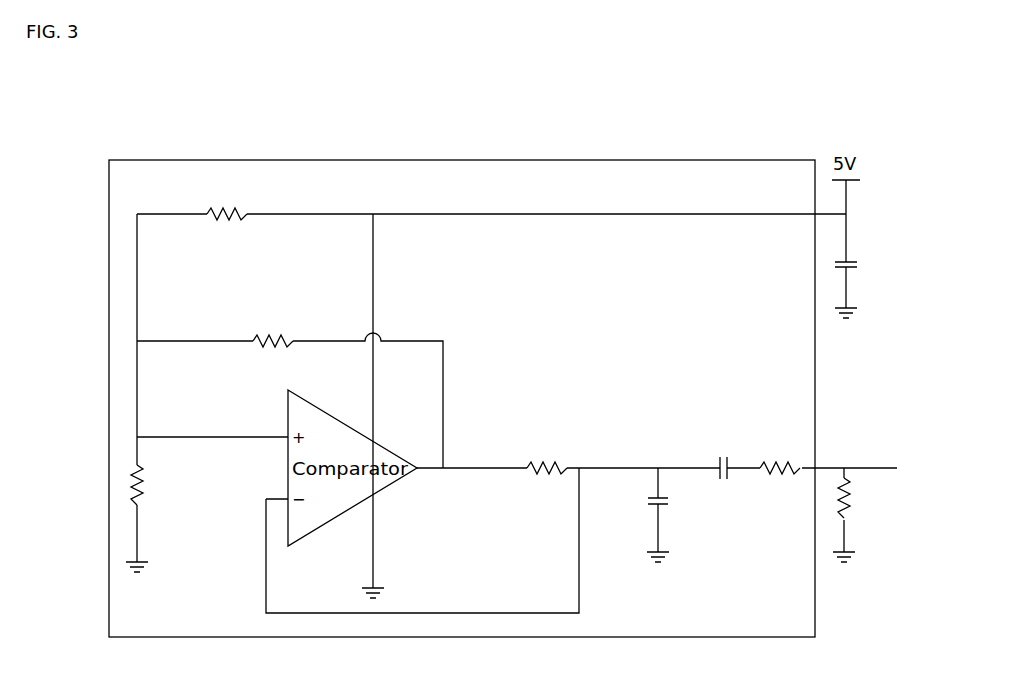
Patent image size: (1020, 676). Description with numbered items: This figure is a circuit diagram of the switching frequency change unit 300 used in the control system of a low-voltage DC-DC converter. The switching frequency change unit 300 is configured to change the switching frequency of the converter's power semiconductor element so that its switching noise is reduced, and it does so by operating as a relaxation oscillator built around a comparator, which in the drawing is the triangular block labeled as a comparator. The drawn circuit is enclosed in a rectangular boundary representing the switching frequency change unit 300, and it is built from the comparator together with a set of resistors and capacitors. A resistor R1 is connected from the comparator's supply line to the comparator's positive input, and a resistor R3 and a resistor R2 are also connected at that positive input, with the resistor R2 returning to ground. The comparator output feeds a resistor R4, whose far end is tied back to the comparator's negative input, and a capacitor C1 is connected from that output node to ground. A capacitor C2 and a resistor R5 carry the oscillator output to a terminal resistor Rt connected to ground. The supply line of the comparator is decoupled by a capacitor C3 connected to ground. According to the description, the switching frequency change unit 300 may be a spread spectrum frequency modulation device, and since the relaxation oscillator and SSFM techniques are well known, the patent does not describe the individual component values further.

The switching frequency change unit 300 is at (660, 160).
The resistor R1 100kΩ R1 is at (226, 207).
The resistor R2 100kΩ R2 is at (165, 515).
The resistor R3 390kΩ R3 is at (269, 329).
The resistor R4 18kΩ R4 is at (542, 458).
The resistor R5 100kΩ R5 is at (775, 456).
The thermistor Rt is at (857, 520).
The capacitor C1 1uF C1 is at (678, 522).
The capacitor C2 1uF C2 is at (726, 447).
The capacitor C3 1uF C3 is at (863, 277).